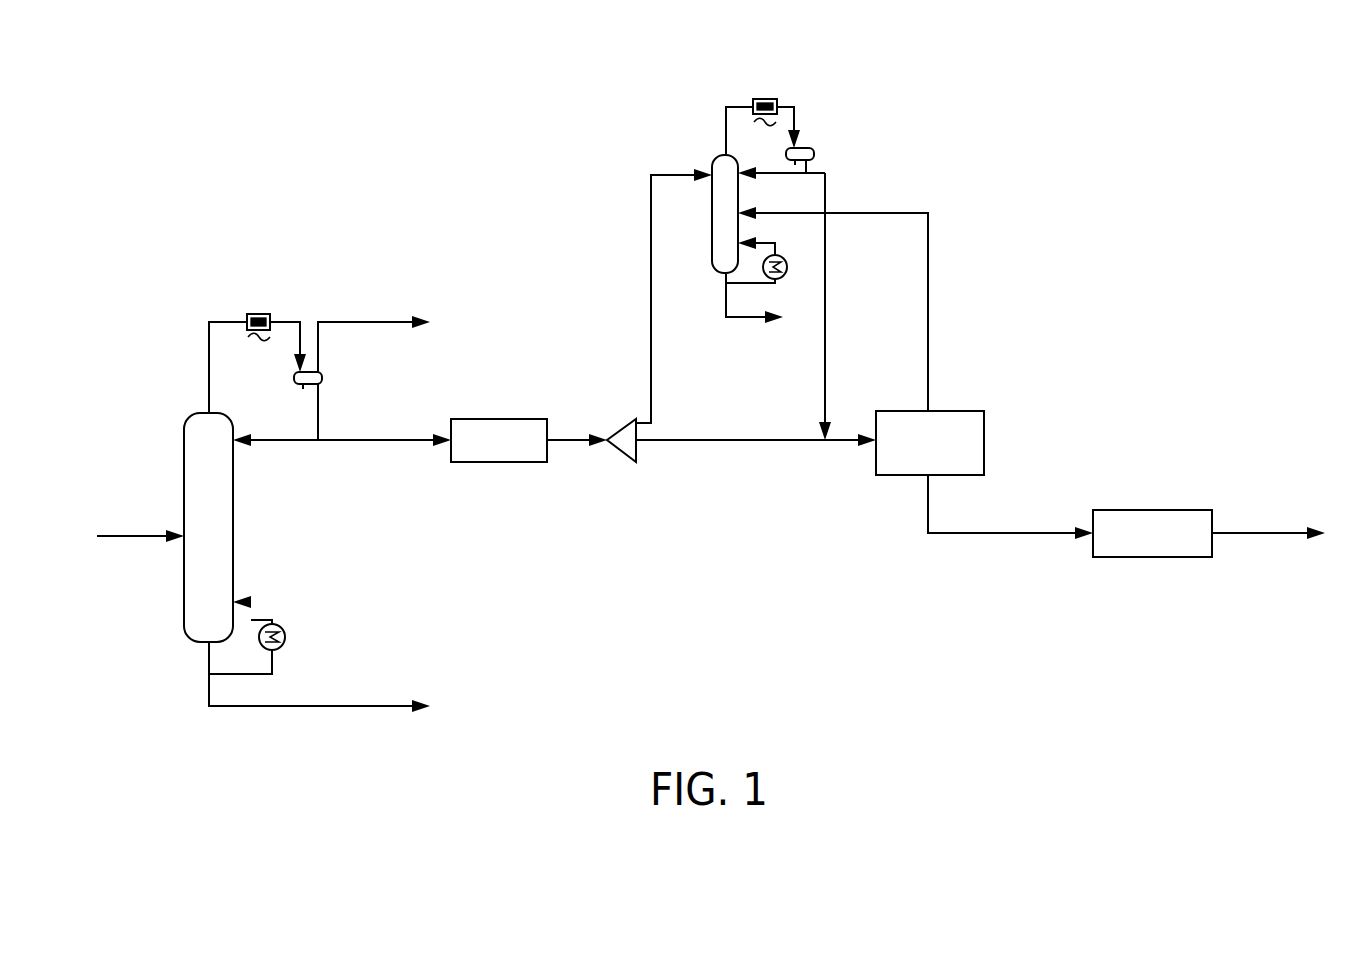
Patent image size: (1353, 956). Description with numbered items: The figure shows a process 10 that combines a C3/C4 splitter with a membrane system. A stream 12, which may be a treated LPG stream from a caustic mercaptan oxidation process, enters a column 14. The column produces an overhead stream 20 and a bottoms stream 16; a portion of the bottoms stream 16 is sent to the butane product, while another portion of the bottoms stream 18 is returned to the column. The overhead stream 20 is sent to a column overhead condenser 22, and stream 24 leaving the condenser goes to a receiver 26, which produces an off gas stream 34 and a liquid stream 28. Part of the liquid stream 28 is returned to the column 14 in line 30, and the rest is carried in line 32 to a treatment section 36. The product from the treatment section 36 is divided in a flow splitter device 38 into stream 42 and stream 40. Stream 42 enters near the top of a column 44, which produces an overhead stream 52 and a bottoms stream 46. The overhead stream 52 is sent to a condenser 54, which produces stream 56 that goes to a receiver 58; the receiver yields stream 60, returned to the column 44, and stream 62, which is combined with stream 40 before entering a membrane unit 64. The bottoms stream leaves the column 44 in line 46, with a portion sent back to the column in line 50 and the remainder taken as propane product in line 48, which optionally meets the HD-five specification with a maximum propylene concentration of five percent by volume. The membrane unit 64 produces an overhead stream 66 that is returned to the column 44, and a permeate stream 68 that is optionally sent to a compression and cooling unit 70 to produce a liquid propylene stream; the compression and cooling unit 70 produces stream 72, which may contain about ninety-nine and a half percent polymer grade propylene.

The process 10 is at (1150, 146).
The stream 12 is at (112, 536).
The column 14 is at (235, 536).
The bottoms stream 16 is at (284, 708).
The bottoms stream portion 18 is at (272, 660).
The overhead stream 20 is at (208, 390).
The column overhead condenser 22 is at (258, 310).
The stream 24 is at (297, 320).
The receiver 26 is at (325, 377).
The liquid stream 28 is at (318, 412).
The line 30 is at (282, 445).
The line 32 is at (390, 445).
The off gas stream 34 is at (380, 320).
The treatment section 36 is at (498, 418).
The flow splitter device 38 is at (636, 435).
The stream 40 is at (737, 448).
The stream 42 is at (651, 292).
The column 44 is at (710, 205).
The bottoms stream 46 is at (722, 278).
The line 48 is at (723, 318).
The line 50 is at (775, 287).
The overhead stream 52 is at (725, 130).
The condenser 54 is at (766, 98).
The stream 56 is at (800, 113).
The receiver 58 is at (818, 150).
The stream 60 is at (767, 175).
The stream 62 is at (826, 192).
The membrane unit 64 is at (984, 443).
The overhead stream 66 is at (930, 300).
The permeate stream 68 is at (1012, 540).
The compression and cooling unit 70 is at (1146, 510).
The stream 72 is at (1255, 540).